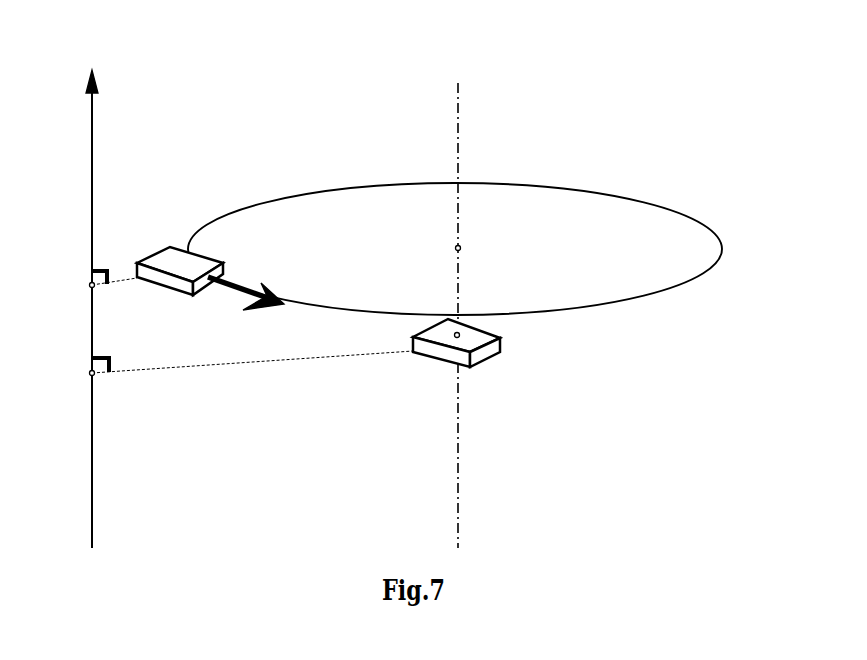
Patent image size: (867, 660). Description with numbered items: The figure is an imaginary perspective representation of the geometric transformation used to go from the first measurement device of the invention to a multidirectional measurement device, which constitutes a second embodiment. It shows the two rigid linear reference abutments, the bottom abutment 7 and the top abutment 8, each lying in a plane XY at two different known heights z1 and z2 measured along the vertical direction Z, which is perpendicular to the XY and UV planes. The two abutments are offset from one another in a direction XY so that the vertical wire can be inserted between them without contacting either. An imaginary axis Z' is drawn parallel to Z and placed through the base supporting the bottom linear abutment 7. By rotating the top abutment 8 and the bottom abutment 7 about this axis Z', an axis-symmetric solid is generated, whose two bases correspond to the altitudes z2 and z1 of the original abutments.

The bottom linear abutment 7 is at (478, 340).
The top linear abutment 8 is at (182, 244).
The vertical direction Z is at (91, 295).
The axis Z" Z' is at (458, 299).
The height z1 is at (239, 370).
The height z2 is at (101, 286).